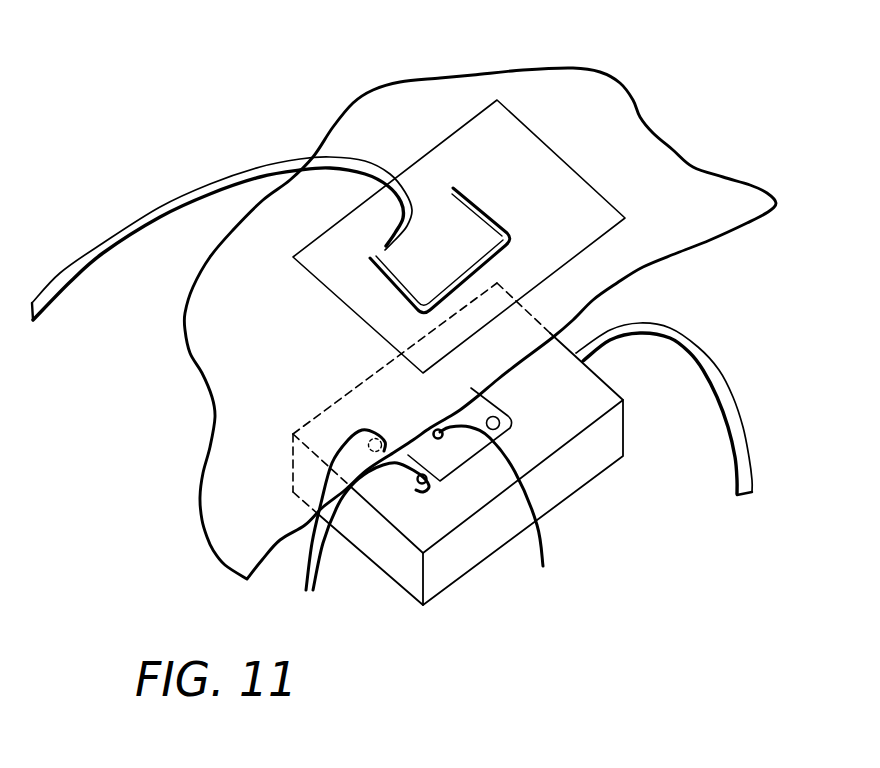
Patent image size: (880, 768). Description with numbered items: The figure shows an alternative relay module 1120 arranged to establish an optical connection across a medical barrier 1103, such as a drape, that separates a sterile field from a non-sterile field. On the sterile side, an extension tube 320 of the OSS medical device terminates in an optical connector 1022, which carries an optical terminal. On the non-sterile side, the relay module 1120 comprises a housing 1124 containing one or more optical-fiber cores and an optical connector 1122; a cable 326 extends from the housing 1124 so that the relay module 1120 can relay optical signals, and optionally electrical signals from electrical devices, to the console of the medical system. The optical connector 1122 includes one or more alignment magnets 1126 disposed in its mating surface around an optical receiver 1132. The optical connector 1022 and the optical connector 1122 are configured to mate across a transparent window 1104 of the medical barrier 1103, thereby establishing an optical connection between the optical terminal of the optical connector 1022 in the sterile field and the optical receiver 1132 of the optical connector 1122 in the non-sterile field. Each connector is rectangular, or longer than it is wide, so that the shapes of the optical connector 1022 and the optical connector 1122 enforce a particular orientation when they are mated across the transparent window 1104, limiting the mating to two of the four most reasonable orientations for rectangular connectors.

The extension tube 320 is at (103, 250).
The cable 326 is at (696, 346).
The optical connector 1022 is at (456, 193).
The medical barrier 1103 is at (377, 100).
The transparent window 1104 is at (557, 177).
The relay module 1120 is at (612, 527).
The optical connector 1122 is at (439, 508).
The housing 1124 is at (592, 465).
The alignment magnets 1126 is at (354, 523).
The optical receiver 1132 is at (504, 512).